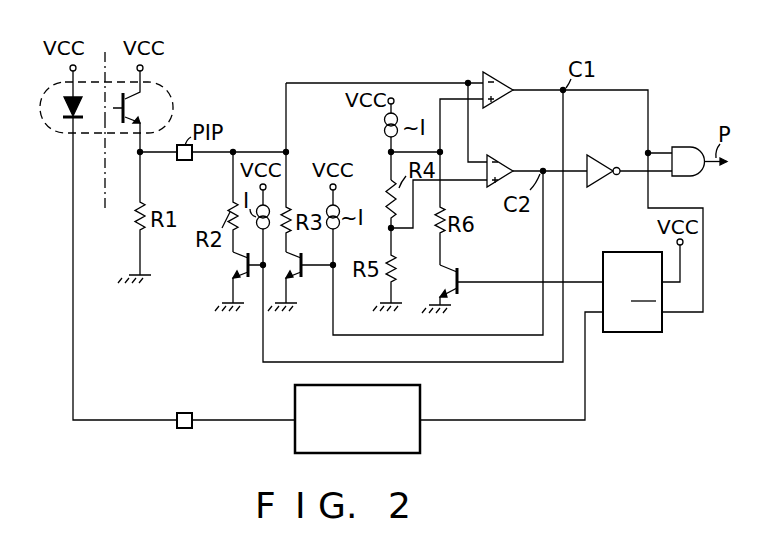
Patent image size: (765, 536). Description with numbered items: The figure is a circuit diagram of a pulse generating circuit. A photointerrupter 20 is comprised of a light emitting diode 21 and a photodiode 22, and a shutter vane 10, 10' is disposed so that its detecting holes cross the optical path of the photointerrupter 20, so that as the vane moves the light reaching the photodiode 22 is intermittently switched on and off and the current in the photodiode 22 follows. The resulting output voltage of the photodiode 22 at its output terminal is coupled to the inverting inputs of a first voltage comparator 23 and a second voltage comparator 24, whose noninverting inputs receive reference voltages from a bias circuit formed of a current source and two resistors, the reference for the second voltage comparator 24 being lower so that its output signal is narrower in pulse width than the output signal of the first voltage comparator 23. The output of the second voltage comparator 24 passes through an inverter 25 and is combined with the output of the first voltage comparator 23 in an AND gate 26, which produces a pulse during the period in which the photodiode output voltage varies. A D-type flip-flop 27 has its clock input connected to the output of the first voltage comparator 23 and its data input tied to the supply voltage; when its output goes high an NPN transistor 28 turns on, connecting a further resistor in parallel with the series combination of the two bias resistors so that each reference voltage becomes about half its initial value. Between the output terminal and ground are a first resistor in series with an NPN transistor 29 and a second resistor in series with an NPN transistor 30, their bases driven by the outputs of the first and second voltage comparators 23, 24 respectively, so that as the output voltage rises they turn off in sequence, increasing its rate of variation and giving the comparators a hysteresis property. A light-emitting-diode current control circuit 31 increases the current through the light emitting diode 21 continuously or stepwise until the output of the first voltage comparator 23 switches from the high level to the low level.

The shutter vane 10 is at (119, 64).
The shutter vane 10' is at (94, 164).
The photointerrupter 20 is at (47, 86).
The light emitting diode 21 is at (66, 126).
The photodiode 22 is at (143, 108).
The first voltage comparator 23 is at (504, 80).
The second voltage comparator 24 is at (506, 162).
The inverter 25 is at (606, 159).
The AND gate 26 is at (683, 147).
The D-type flip-flop 27 is at (625, 251).
The NPN transistor 28 is at (455, 271).
The NPN transistor 29 is at (228, 263).
The NPN transistor 30 is at (296, 278).
The light-emitting-diode current control circuit 31 is at (421, 437).